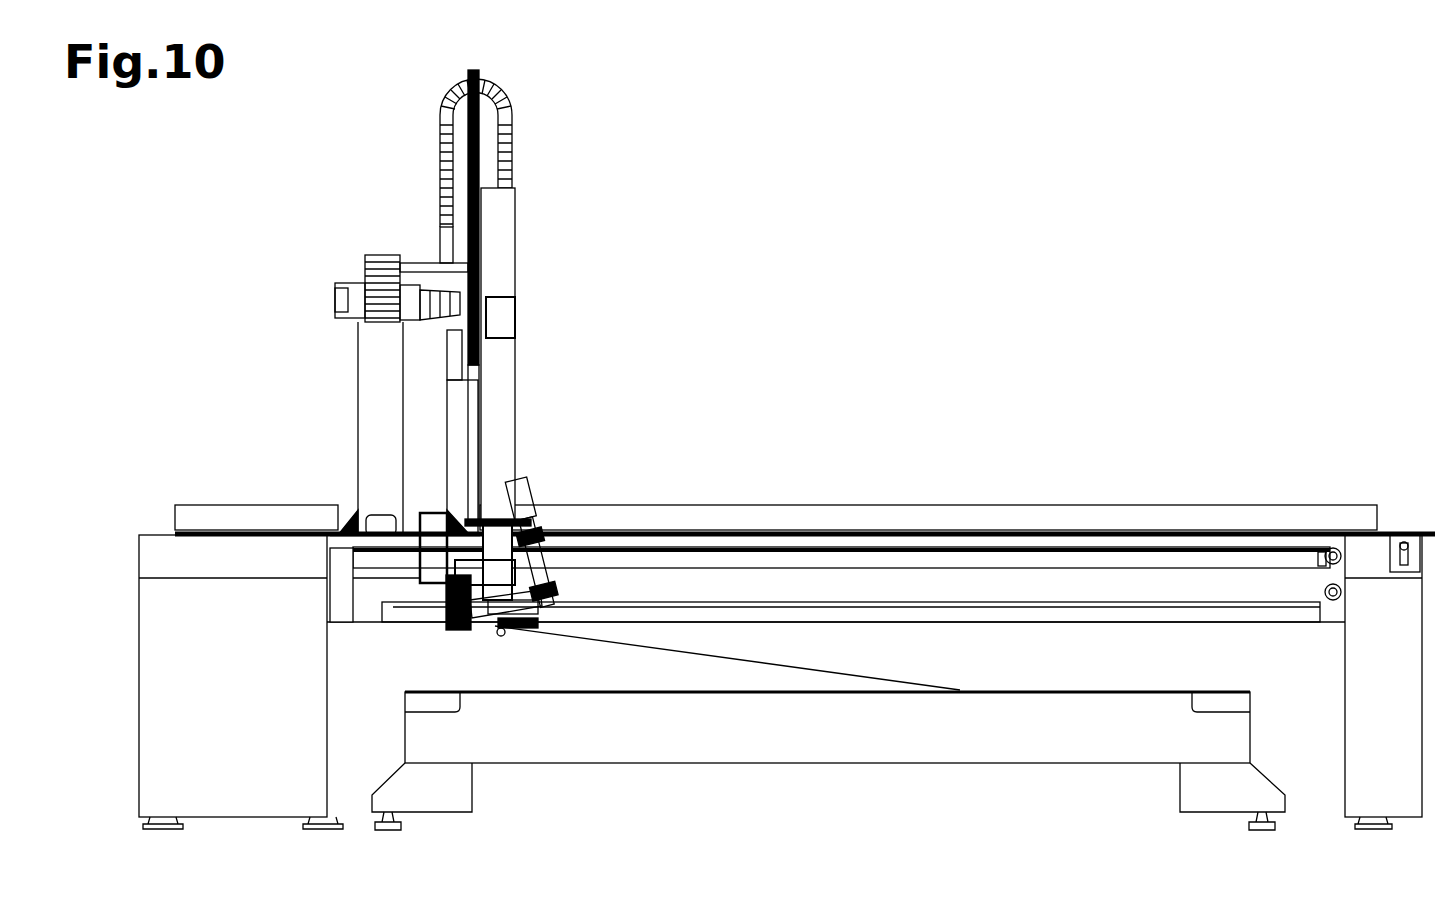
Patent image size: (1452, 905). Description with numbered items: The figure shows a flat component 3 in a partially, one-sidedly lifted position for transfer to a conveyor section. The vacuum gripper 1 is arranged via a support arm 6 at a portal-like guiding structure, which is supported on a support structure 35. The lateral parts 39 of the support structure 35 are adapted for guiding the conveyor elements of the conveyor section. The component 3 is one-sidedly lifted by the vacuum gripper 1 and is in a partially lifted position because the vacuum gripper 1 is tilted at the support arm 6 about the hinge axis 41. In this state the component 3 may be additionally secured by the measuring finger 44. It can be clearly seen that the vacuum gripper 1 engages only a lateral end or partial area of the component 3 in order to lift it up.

The vacuum gripper 1 is at (592, 457).
The component 3 is at (657, 652).
The support arm 6 is at (500, 277).
The support structure 35 is at (1300, 447).
The lateral parts 39 is at (1094, 512).
The hinge axis 41 is at (548, 546).
The measuring finger 44 is at (452, 625).